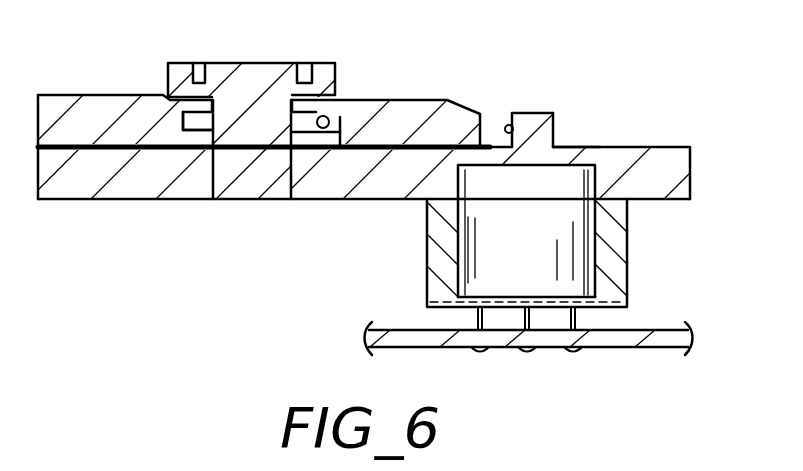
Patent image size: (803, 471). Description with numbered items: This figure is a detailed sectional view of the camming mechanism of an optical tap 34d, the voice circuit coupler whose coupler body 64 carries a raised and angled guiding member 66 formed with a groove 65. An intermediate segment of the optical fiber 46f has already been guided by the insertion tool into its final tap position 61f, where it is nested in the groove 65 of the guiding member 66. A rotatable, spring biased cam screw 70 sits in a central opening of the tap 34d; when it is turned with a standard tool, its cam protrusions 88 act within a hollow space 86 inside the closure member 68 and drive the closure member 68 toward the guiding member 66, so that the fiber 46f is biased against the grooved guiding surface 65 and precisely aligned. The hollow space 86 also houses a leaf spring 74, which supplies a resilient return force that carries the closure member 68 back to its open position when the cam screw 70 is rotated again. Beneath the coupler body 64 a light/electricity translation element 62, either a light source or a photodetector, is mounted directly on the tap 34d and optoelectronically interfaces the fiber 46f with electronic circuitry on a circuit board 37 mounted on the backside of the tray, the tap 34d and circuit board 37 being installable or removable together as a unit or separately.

The closure member 68 is at (90, 115).
The cam screw 70 is at (168, 70).
The leaf spring 74 is at (323, 115).
The final tap position 61f is at (505, 125).
The optical fiber 46f is at (509, 113).
The guiding member 66 is at (548, 120).
The groove 65 is at (533, 145).
The coupler body 64 is at (396, 173).
The light/electricity translation element 62 is at (538, 268).
The circuit board 37 is at (400, 333).
The hollow space 86 is at (170, 130).
The cam protrusions 88 is at (187, 122).
The tap 34d is at (128, 289).